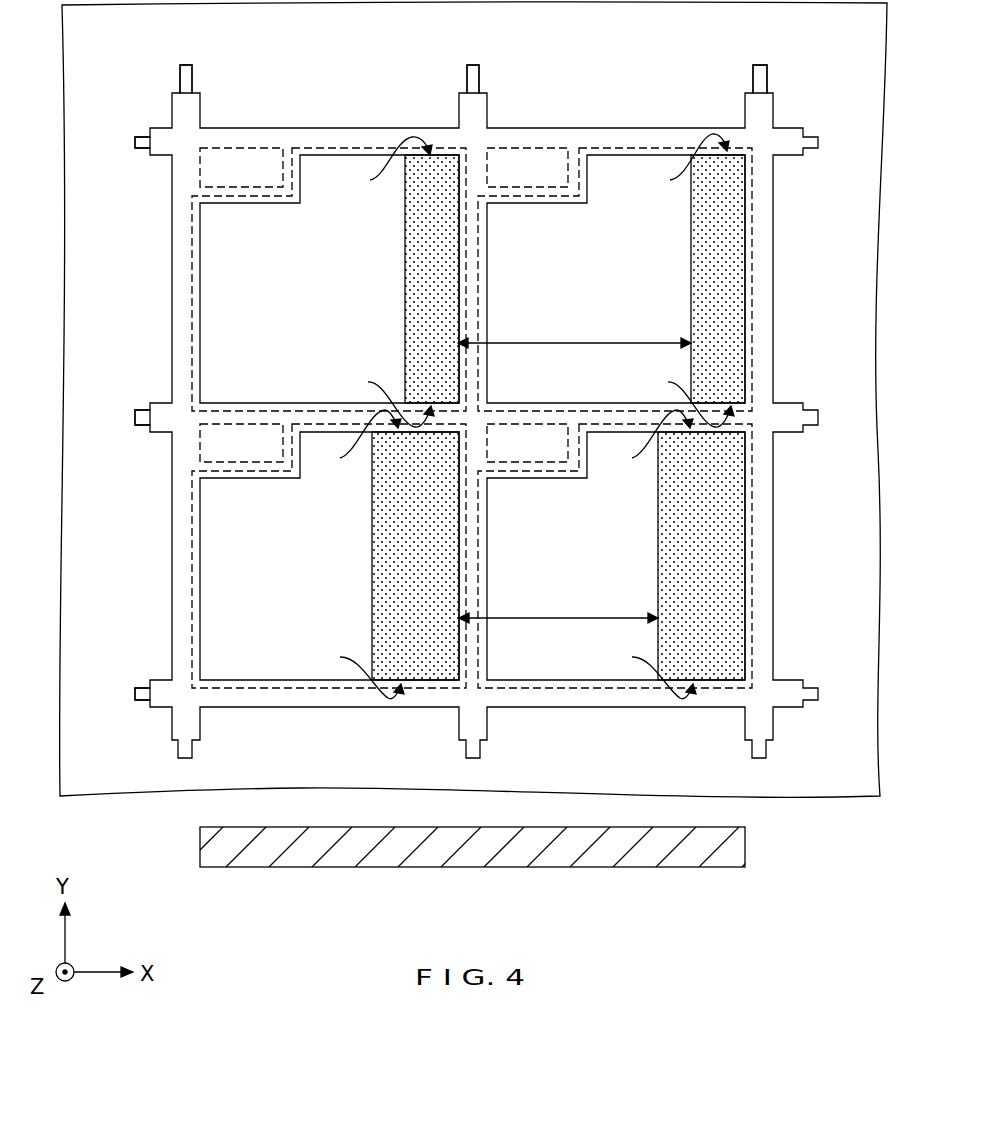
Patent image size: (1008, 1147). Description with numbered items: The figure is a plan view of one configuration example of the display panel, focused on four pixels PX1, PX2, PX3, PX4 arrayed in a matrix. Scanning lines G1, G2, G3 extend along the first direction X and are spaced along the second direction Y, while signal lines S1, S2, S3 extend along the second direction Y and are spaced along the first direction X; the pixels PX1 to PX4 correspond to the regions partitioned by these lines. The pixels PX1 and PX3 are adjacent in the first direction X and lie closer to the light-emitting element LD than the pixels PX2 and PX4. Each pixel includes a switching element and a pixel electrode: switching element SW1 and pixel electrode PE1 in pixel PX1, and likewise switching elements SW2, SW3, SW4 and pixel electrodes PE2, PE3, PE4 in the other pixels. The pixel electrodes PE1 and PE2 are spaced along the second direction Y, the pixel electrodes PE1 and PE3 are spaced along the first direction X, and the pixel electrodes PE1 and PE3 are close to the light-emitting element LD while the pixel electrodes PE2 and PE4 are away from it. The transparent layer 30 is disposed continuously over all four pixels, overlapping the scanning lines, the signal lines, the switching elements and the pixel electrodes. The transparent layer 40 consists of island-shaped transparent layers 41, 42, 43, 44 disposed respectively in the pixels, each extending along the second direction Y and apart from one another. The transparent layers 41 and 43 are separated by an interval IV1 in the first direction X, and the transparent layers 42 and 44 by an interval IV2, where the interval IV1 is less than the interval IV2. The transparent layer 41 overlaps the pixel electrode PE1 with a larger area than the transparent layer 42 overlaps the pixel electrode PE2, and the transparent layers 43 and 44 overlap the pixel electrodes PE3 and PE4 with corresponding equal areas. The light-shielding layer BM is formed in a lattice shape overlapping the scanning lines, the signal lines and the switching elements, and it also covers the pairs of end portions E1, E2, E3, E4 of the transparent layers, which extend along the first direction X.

The transparent layer 30 is at (101, 782).
The light-shielding layer BM is at (178, 110).
The signal line S1 is at (186, 64).
The signal line S2 is at (473, 64).
The signal line S3 is at (760, 64).
The scanning line G1 is at (134, 693).
The scanning line G2 is at (134, 417).
The scanning line G3 is at (134, 143).
The pixel electrode PE1 is at (262, 690).
The pixel electrode PE2 is at (190, 252).
The pixel electrode PE3 is at (558, 690).
The pixel electrode PE4 is at (628, 146).
The switching element SW1 is at (200, 446).
The switching element SW2 is at (200, 183).
The switching element SW3 is at (552, 465).
The switching element SW4 is at (552, 146).
The pixel PX1 is at (243, 559).
The pixel PX2 is at (243, 317).
The pixel PX3 is at (627, 563).
The pixel PX4 is at (660, 283).
The transparent layer 40 is at (574, 417).
The transparent layer 41 is at (383, 570).
The transparent layer 42 is at (420, 254).
The transparent layer 43 is at (735, 503).
The transparent layer 44 is at (735, 216).
The end portions E1 is at (356, 554).
The end portions E2 is at (387, 282).
The end portions E3 is at (648, 554).
The end portions E4 is at (687, 280).
The interval IV1 is at (548, 615).
The interval IV2 is at (583, 341).
The light-emitting element LD is at (732, 849).